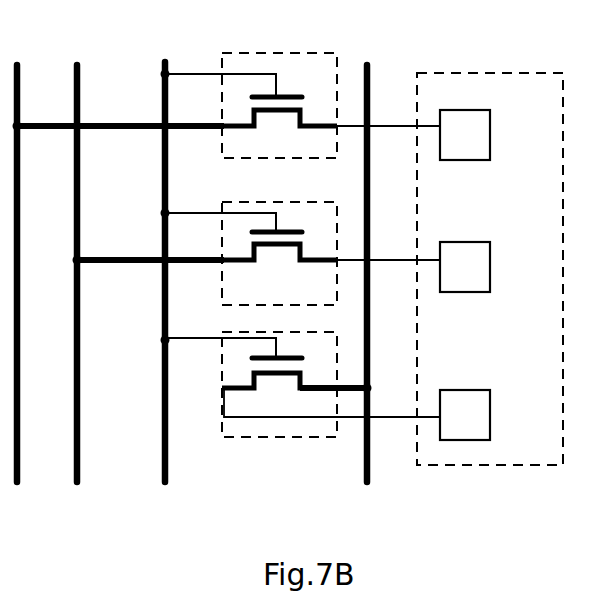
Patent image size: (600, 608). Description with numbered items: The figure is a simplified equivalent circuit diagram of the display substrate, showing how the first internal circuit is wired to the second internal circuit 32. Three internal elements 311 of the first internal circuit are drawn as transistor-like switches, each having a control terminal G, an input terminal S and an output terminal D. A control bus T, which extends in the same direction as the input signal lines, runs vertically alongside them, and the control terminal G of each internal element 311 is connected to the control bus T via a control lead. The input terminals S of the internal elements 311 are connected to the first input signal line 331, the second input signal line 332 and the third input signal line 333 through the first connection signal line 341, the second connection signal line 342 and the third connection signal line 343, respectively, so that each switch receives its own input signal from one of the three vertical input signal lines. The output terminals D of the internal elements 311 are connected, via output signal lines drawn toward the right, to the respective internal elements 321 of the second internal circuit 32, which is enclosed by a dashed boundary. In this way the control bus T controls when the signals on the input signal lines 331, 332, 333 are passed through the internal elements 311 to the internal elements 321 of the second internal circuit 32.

The first input signal line 331 is at (17, 66).
The second input signal line 332 is at (77, 66).
The third input signal line 333 is at (367, 66).
The first connection signal line 341 is at (92, 123).
The second connection signal line 342 is at (90, 260).
The third connection signal line 343 is at (348, 393).
The internal element 311 is at (263, 53).
The second internal circuit 32 is at (518, 73).
The internal element 321 is at (490, 110).
The control bus T is at (165, 63).